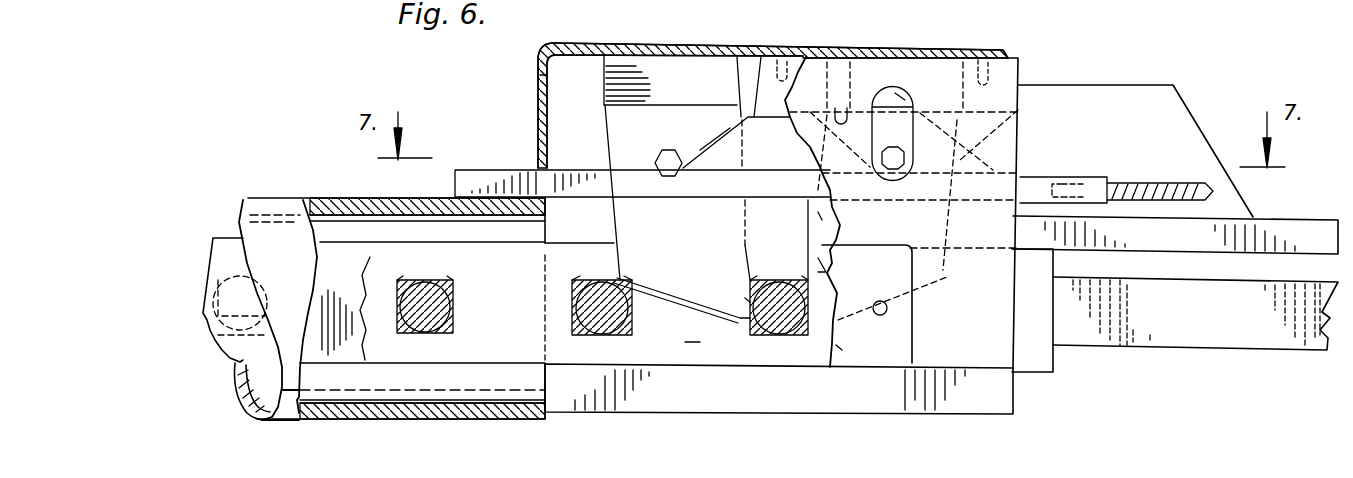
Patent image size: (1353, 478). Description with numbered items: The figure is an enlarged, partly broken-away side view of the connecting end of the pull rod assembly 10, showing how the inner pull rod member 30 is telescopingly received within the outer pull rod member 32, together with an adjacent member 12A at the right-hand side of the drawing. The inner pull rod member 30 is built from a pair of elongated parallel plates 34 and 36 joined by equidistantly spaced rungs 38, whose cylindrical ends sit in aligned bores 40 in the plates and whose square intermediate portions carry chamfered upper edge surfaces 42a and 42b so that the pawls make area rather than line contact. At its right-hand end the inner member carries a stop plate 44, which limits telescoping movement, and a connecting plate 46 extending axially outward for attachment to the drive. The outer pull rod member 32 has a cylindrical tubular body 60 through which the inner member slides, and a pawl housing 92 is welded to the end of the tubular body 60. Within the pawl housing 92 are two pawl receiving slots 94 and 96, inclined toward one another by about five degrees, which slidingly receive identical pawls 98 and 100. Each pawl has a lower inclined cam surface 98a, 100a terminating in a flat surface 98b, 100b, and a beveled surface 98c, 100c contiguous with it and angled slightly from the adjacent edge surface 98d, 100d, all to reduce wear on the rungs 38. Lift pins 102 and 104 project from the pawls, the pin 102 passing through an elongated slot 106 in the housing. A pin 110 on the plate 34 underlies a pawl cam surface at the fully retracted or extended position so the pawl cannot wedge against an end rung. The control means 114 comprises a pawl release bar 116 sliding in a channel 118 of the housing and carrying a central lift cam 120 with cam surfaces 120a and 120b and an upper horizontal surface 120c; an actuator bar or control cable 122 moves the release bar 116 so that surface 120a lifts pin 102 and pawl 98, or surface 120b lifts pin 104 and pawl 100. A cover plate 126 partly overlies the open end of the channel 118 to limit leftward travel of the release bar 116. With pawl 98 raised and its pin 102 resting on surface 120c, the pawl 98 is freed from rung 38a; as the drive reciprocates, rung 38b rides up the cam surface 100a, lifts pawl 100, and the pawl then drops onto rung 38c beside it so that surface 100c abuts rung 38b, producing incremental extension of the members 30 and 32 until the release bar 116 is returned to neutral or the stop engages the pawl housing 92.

The pull rod assembly 10 is at (1072, 0).
The plate 12A is at (1010, 116).
The inner pull rod member 30 is at (202, 289).
The outer pull rod member 32 is at (445, 420).
The plate 34 is at (243, 350).
The plate 36 is at (670, 364).
The rungs 38 is at (210, 310).
The rung 38a is at (775, 337).
The rung 38b is at (600, 338).
The rung 38c is at (420, 336).
The bores 40 is at (452, 312).
The chamfered edge surface 42a is at (462, 266).
The chamfered edge surface 42b is at (410, 266).
The stop plate 44 is at (1032, 374).
The connecting plate 46 is at (1268, 330).
The tubular body 60 is at (312, 418).
The pawl housing 92 is at (575, 66).
The pawl receiving slot 94 is at (818, 217).
The pawl receiving slot 96 is at (609, 60).
The pawl 98 is at (905, 95).
The lower inclined cam surface 98a is at (840, 346).
The lower end surface 98b is at (822, 322).
The beveled surface 98c is at (834, 292).
The edge surface 98d is at (820, 272).
The pawl 100 is at (658, 110).
The lower inclined cam surface 100a is at (668, 303).
The lower end surface 100b is at (690, 346).
The beveled surface 100c is at (745, 300).
The edge surface 100d is at (744, 178).
The lift pin 102 is at (893, 165).
The lift pin 104 is at (662, 152).
The elongated slot 106 is at (902, 97).
The pin 110 is at (888, 312).
The control means 114 is at (1100, 168).
The pawl release bar 116 is at (1040, 188).
The channel 118 is at (852, 58).
The lift cam 120 is at (787, 161).
The lift cam surface 120a is at (845, 110).
The lift cam surface 120b is at (748, 122).
The upper horizontal surface 120c is at (760, 110).
The actuator bar or control cable 122 is at (1182, 158).
The cover plate 126 is at (538, 74).